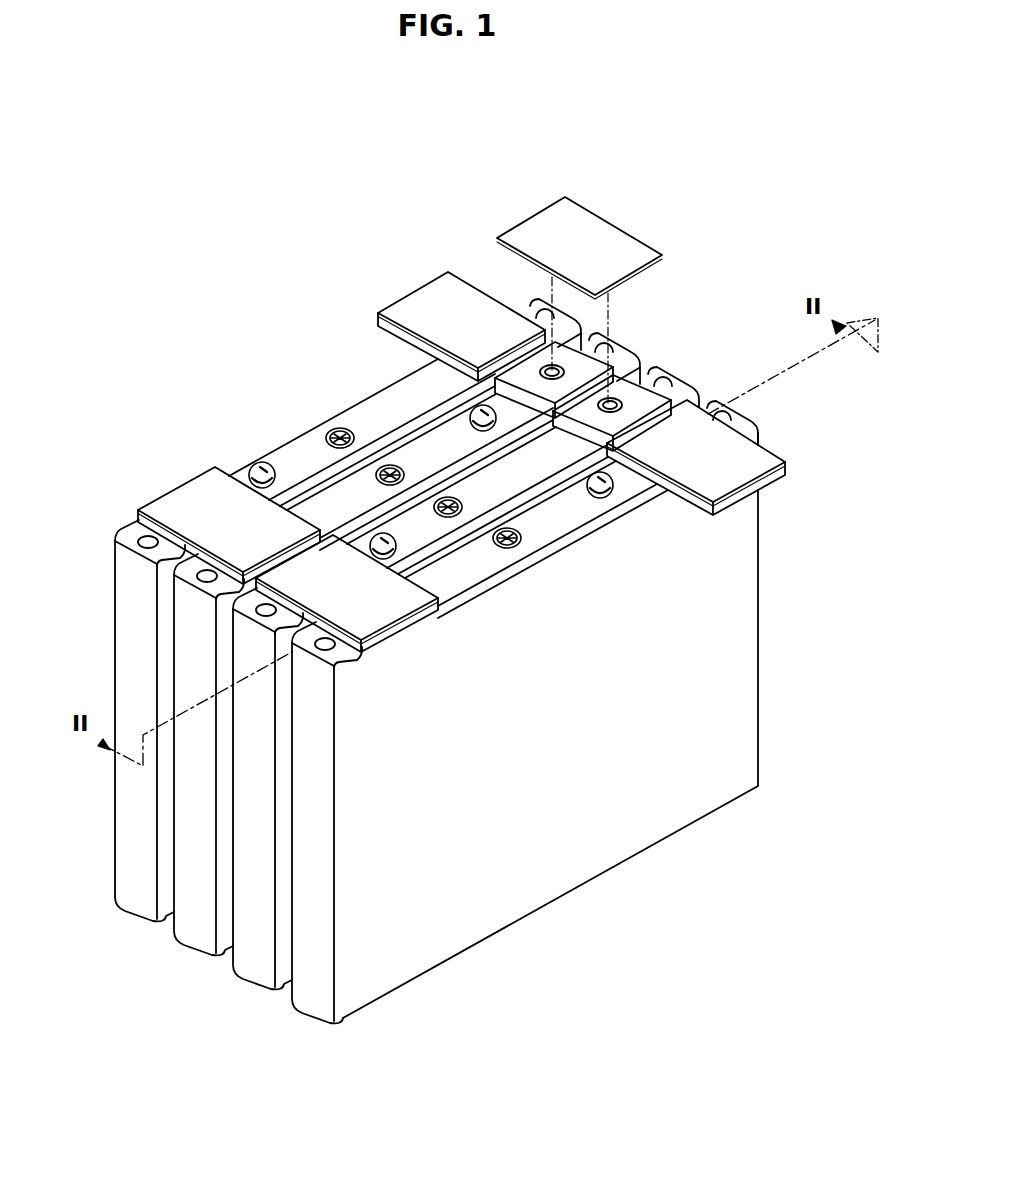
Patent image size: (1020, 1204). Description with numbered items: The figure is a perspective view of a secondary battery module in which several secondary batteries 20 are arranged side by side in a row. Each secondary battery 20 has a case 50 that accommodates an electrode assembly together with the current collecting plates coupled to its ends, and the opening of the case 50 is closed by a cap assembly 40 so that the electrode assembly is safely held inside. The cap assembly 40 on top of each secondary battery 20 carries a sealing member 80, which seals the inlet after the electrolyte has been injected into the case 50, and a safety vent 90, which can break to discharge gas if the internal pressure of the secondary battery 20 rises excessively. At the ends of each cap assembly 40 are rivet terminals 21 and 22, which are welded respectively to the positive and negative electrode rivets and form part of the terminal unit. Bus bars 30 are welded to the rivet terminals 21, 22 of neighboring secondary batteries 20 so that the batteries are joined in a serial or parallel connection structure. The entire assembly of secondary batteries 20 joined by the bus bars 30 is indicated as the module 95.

The secondary battery 20 is at (130, 920).
The rivet terminal 21 is at (445, 353).
The rivet terminal 22 is at (508, 392).
The bus bar 30 is at (600, 228).
The cap assembly 40 is at (385, 395).
The case 50 is at (120, 609).
The sealing member 80 is at (262, 462).
The safety vent 90 is at (332, 428).
The battery module 95 is at (285, 338).